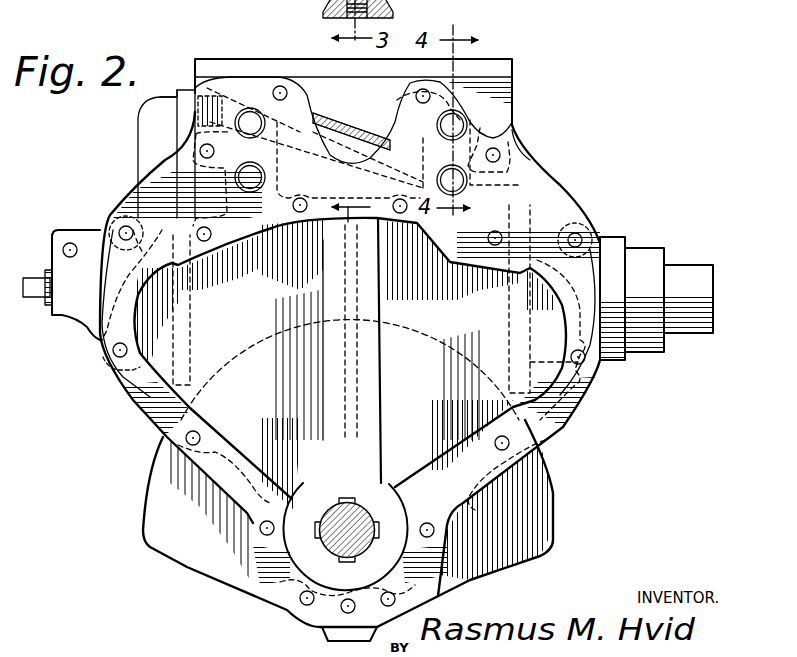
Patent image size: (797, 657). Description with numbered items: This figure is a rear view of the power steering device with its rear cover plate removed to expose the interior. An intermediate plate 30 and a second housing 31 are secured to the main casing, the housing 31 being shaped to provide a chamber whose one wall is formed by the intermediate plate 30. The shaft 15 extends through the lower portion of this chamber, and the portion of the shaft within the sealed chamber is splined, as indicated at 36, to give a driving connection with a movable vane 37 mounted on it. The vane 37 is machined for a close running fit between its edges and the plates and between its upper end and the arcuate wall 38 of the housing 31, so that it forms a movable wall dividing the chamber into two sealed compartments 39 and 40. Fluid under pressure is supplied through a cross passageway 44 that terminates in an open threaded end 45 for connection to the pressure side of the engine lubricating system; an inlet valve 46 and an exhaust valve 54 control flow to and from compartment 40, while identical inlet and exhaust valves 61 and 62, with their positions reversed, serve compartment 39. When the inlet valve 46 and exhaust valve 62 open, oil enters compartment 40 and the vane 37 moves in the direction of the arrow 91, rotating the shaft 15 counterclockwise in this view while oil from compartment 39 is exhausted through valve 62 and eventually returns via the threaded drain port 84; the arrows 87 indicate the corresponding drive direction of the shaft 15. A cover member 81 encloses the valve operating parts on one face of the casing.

The shaft 15 is at (343, 548).
The intermediate plate 30 is at (200, 348).
The second housing 31 is at (532, 160).
The splined portion 36 is at (385, 480).
The movable vane 37 is at (368, 345).
The arcuate wall 38 is at (228, 359).
The sealed compartment 39 is at (223, 400).
The sealed compartment 40 is at (448, 402).
The cross passageway 44 is at (337, 140).
The open threaded end 45 is at (196, 112).
The inlet valve 46 is at (454, 180).
The exhaust valve 54 is at (454, 125).
The inlet valve 61 is at (250, 123).
The exhaust valve 62 is at (252, 176).
The cover member 81 is at (162, 95).
The threaded drain port 84 is at (332, 15).
The arrows 87 is at (304, 518).
The arrow 91 is at (348, 217).